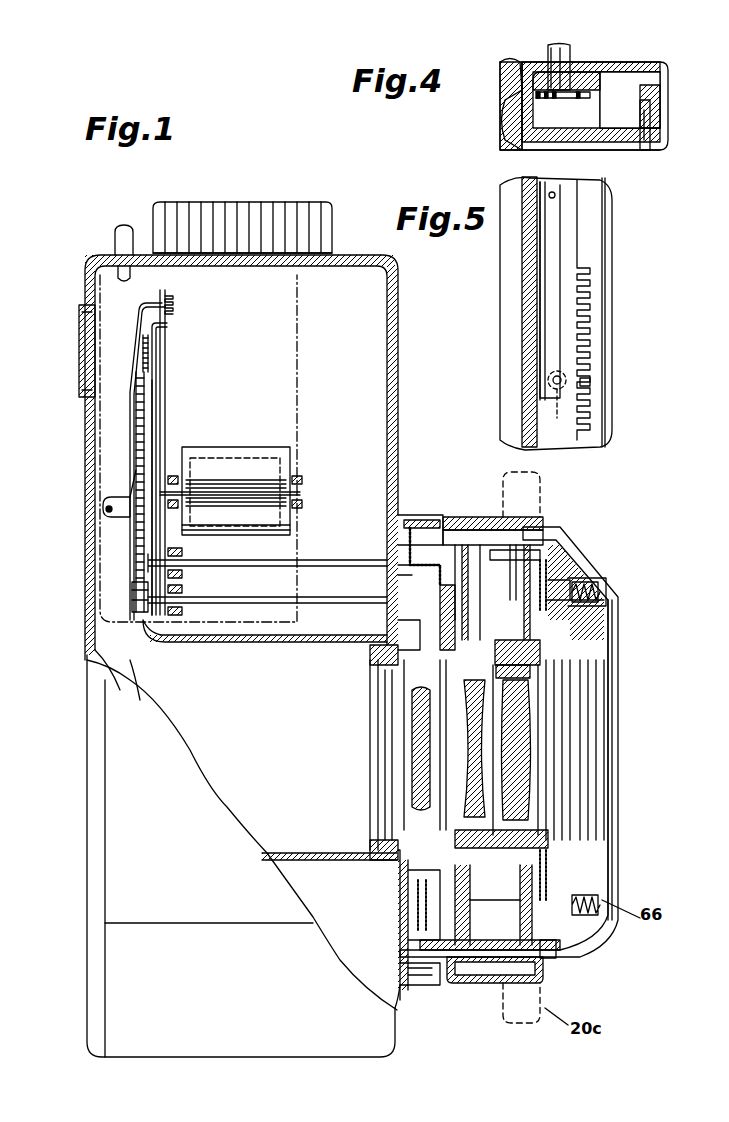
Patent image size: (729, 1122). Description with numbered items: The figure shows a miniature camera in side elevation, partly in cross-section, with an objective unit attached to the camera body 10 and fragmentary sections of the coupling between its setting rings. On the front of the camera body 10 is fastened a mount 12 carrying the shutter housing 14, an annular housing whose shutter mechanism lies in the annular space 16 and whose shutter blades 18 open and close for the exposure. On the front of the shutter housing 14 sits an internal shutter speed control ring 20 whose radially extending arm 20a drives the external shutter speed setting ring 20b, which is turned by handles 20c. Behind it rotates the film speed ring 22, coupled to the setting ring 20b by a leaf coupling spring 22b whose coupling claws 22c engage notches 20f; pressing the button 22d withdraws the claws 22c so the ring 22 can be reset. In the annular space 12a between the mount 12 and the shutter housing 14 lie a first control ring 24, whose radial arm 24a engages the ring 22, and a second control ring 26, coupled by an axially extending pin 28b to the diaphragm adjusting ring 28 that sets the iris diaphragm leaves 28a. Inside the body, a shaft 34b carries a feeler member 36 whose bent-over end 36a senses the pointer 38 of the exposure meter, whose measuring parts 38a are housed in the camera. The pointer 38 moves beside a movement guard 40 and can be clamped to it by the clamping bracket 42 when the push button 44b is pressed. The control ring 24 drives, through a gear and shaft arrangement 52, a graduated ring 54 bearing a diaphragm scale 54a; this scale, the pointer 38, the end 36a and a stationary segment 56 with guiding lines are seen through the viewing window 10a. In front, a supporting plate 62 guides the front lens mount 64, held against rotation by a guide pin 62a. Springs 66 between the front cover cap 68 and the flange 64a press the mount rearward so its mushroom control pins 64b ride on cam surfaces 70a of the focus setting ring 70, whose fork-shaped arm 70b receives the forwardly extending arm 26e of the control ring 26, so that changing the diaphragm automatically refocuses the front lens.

In FIG. 1, the camera body 10 is at (416, 360).
In FIG. 1, the viewing window 10a is at (80, 342).
In FIG. 1, the mount 12 is at (424, 990).
In FIG. 4, the mount 12 is at (510, 112).
In FIG. 1, the annular space 12a is at (400, 935).
In FIG. 1, the shutter housing 14 is at (450, 530).
In FIG. 1, the annular space 16 is at (493, 905).
In FIG. 1, the shutter blades 18 is at (470, 725).
In FIG. 1, the internal shutter speed control ring 20 is at (520, 574).
In FIG. 4, the internal shutter speed control ring 20 is at (648, 150).
In FIG. 1, the radially extending arm 20a is at (500, 517).
In FIG. 1, the external shutter speed setting ring 20b is at (495, 985).
In FIG. 4, the external shutter speed setting ring 20b is at (640, 70).
In FIG. 5, the external shutter speed setting ring 20b is at (592, 440).
In FIG. 1, the handles 20c is at (545, 485).
In FIG. 5, the notches 20f is at (590, 320).
In FIG. 1, the film speed ring 22 is at (430, 983).
In FIG. 4, the film speed ring 22 is at (528, 68).
In FIG. 5, the film speed ring 22 is at (522, 252).
In FIG. 4, the leaf coupling spring 22b is at (550, 96).
In FIG. 5, the leaf coupling spring 22b is at (550, 298).
In FIG. 5, the coupling claws 22c is at (592, 384).
In FIG. 4, the button 22d is at (568, 60).
In FIG. 5, the button 22d is at (565, 318).
In FIG. 1, the first control ring 24 is at (398, 618).
In FIG. 1, the radial arm 24a is at (424, 520).
In FIG. 1, the second control ring 26 is at (398, 893).
In FIG. 1, the forwardly extending arm 26e is at (560, 945).
In FIG. 1, the diaphragm adjusting ring 28 is at (478, 640).
In FIG. 1, the iris diaphragm leaves 28a is at (372, 710).
In FIG. 1, the axially extending pin 28b is at (398, 582).
In FIG. 1, the shaft 34b is at (312, 560).
In FIG. 1, the feeler member 36 is at (160, 378).
In FIG. 1, the bent-over end 36a is at (168, 325).
In FIG. 1, the pointer 38 is at (168, 412).
In FIG. 1, the measuring parts 38a is at (246, 476).
In FIG. 1, the movement guard 40 is at (176, 300).
In FIG. 1, the clamping bracket 42 is at (140, 304).
In FIG. 1, the push button 44b is at (118, 243).
In FIG. 1, the gear and shaft arrangement 52 is at (145, 590).
In FIG. 1, the graduated ring 54 is at (136, 528).
In FIG. 1, the diaphragm scale 54a is at (118, 392).
In FIG. 1, the stationary segment 56 is at (150, 350).
In FIG. 1, the supporting plate 62 is at (556, 840).
In FIG. 1, the guide pin 62a is at (532, 678).
In FIG. 1, the front lens mount 64 is at (560, 645).
In FIG. 1, the flange 64a is at (600, 560).
In FIG. 1, the mushroom control pins 64b is at (580, 580).
In FIG. 1, the springs 66 is at (600, 584).
In FIG. 1, the front cover cap 68 is at (606, 590).
In FIG. 1, the focus setting ring 70 is at (548, 880).
In FIG. 1, the cam surfaces 70a is at (548, 570).
In FIG. 1, the fork-shaped arm 70b is at (556, 952).